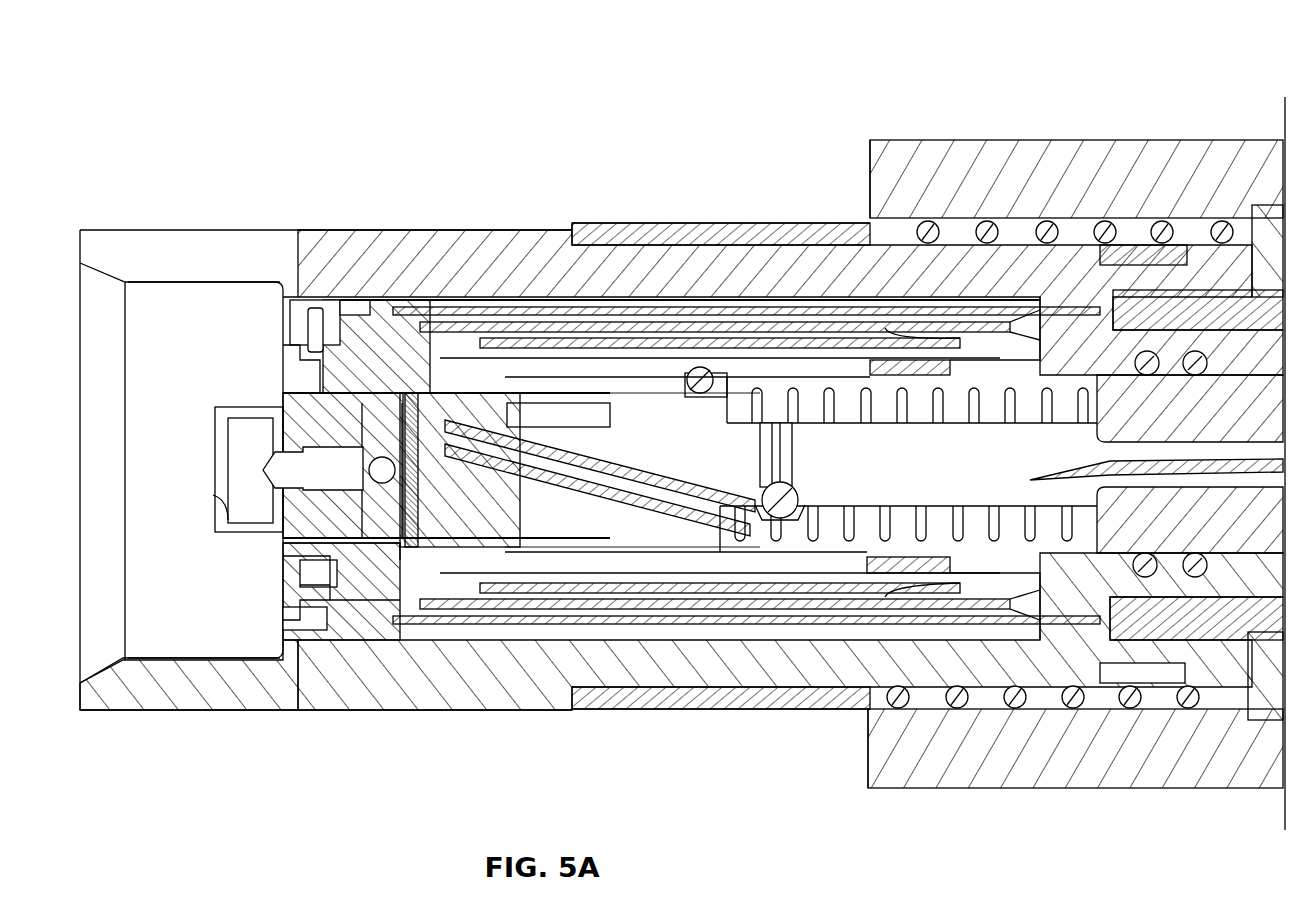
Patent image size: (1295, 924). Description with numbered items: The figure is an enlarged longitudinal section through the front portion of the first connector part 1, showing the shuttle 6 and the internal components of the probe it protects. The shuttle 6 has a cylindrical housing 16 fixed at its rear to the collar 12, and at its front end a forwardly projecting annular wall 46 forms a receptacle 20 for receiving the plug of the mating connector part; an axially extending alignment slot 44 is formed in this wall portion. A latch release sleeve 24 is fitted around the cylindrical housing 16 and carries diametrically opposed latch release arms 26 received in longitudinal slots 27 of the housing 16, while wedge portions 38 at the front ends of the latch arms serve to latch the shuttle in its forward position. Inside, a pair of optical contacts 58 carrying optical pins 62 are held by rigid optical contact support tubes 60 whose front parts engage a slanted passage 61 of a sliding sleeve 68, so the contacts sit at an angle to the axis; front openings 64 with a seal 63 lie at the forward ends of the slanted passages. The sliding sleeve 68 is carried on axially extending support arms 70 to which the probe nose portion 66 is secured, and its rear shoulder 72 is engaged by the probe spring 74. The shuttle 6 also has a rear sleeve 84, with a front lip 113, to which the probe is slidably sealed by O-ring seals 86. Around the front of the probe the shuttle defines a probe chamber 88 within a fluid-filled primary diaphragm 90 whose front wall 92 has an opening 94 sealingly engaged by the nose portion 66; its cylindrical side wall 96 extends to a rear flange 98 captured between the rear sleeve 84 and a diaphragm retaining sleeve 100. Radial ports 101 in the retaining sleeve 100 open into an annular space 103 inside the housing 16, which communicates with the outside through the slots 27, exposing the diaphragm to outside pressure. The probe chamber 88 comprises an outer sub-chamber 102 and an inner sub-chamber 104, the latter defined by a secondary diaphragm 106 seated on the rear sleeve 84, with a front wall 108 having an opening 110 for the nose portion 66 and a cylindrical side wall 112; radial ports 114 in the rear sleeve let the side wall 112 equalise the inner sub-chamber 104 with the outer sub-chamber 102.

The first connector part 1 is at (986, 104).
The shuttle 6 is at (686, 218).
The collar 12 is at (1266, 225).
The cylindrical housing 16 is at (395, 228).
The receptacle 20 is at (134, 403).
The latch release sleeve 24 is at (737, 238).
The latch release arms 26 is at (232, 480).
The longitudinal slots 27 is at (228, 518).
The wedge portions 38 is at (1108, 230).
The alignment slot 44 is at (153, 258).
The annular wall 46 is at (207, 695).
The optical contacts 58 is at (470, 548).
The optical contact support tubes 60 is at (716, 522).
The slanted passage 61 is at (475, 360).
The optical pins 62 is at (293, 468).
The seal 63 is at (412, 548).
The front openings 64 is at (388, 330).
The nose portion 66 is at (283, 393).
The sliding sleeve 68 is at (553, 380).
The support arms 70 is at (645, 462).
The rear shoulder 72 is at (706, 392).
The probe spring 74 is at (832, 400).
The rear sleeve 84 is at (1267, 580).
The O-ring seals 86 is at (1207, 597).
The probe chamber 88 is at (365, 585).
The primary diaphragm 90 is at (382, 565).
The front wall 92 is at (290, 570).
The opening 94 is at (283, 537).
The side wall 96 is at (432, 548).
The rear flange 98 is at (1023, 595).
The diaphragm retaining sleeve 100 is at (925, 620).
The radial ports 101 is at (672, 615).
The outer sub-chamber 102 is at (290, 580).
The annular space 103 is at (972, 630).
The inner sub-chamber 104 is at (520, 548).
The secondary diaphragm 106 is at (548, 620).
The front wall 108 is at (368, 300).
The opening 110 is at (313, 300).
The side wall 112 is at (836, 600).
The front lip 113 is at (455, 345).
The radial ports 114 is at (848, 570).